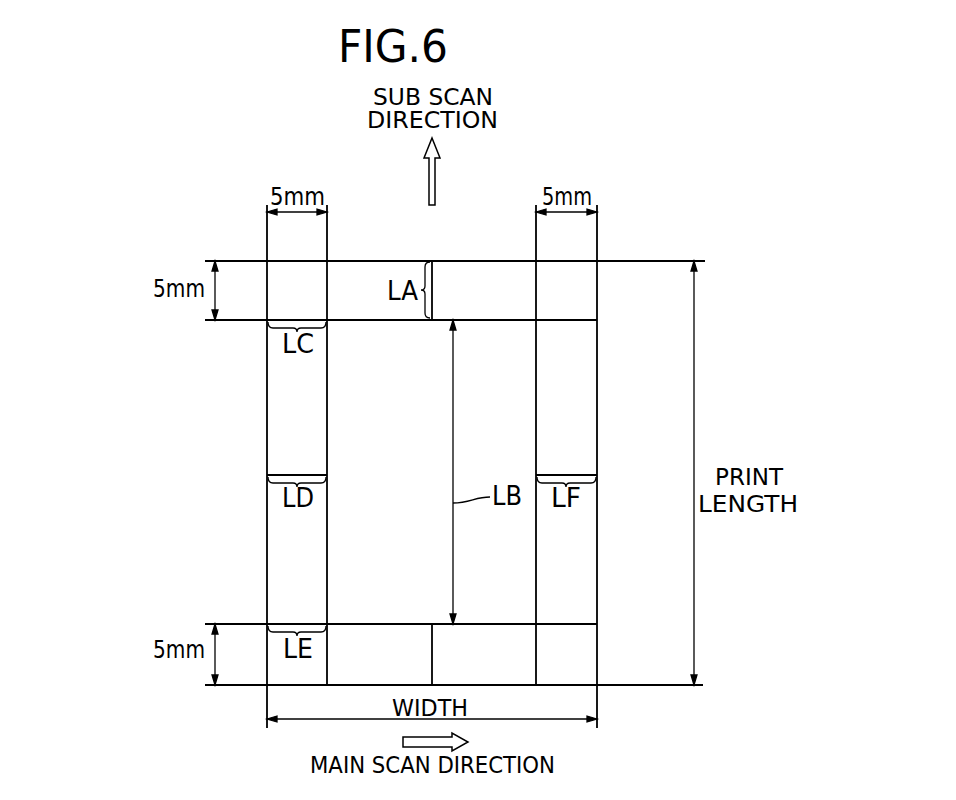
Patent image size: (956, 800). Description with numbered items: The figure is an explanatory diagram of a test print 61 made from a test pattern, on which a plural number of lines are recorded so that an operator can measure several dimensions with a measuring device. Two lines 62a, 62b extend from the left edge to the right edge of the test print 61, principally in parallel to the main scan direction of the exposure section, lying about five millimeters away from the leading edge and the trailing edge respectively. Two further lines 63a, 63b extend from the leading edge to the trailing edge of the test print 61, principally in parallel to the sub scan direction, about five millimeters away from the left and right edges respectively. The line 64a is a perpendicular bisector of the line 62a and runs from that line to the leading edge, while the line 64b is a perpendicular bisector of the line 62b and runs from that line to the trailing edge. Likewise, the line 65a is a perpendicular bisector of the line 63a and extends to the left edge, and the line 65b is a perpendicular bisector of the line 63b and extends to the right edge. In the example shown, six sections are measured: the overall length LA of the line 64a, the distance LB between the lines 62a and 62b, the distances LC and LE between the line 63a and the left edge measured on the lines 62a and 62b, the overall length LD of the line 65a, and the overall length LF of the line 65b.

The test print 61 is at (475, 261).
The line 62a is at (372, 320).
The line 62b is at (372, 624).
The line 63a is at (327, 418).
The line 63b is at (536, 418).
The line 64a is at (433, 290).
The line 64b is at (433, 655).
The line 65a is at (297, 475).
The line 65b is at (565, 475).